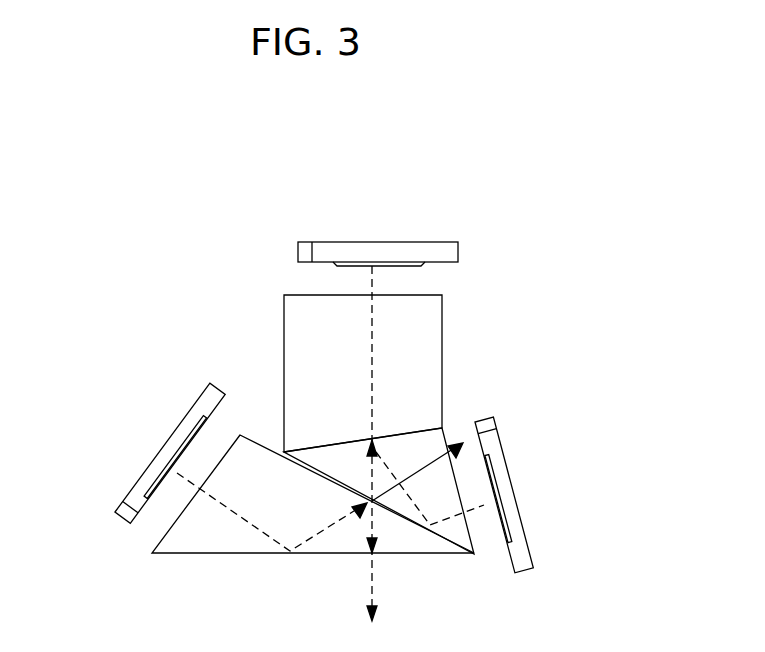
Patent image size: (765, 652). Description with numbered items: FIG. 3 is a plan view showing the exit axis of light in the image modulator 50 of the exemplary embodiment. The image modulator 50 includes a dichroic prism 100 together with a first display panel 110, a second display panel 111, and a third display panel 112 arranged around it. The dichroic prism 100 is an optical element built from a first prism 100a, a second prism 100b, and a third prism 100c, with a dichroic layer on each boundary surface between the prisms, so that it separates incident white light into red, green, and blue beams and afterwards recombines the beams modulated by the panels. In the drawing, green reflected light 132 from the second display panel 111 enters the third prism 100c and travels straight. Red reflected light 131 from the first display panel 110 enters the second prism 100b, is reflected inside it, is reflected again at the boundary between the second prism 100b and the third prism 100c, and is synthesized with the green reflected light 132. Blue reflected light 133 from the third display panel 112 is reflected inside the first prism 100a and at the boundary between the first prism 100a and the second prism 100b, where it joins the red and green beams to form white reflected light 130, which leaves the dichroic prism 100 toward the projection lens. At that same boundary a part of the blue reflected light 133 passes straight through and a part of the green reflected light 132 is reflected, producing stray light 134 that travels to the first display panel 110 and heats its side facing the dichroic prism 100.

The image modulator 50 is at (390, 184).
The second display panel 111 is at (305, 246).
The green reflected light 132 is at (368, 336).
The white reflected light 130 is at (370, 583).
The blue reflected light 133 is at (230, 508).
The red reflected light 131 is at (450, 518).
The stray light 134 is at (418, 472).
The third display panel 112 is at (182, 437).
The first display panel 110 is at (510, 517).
The dichroic prism 100 is at (533, 327).
The first prism 100a is at (241, 540).
The second prism 100b is at (438, 447).
The third prism 100c is at (397, 400).